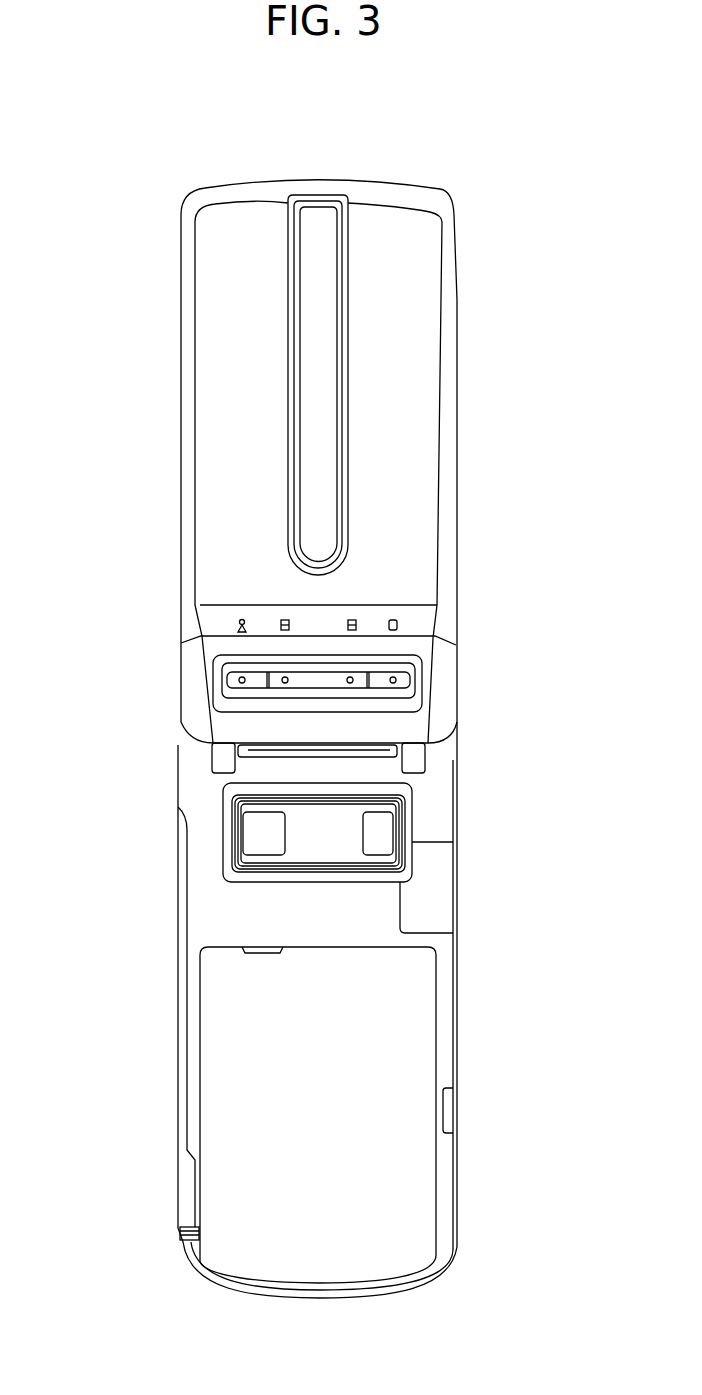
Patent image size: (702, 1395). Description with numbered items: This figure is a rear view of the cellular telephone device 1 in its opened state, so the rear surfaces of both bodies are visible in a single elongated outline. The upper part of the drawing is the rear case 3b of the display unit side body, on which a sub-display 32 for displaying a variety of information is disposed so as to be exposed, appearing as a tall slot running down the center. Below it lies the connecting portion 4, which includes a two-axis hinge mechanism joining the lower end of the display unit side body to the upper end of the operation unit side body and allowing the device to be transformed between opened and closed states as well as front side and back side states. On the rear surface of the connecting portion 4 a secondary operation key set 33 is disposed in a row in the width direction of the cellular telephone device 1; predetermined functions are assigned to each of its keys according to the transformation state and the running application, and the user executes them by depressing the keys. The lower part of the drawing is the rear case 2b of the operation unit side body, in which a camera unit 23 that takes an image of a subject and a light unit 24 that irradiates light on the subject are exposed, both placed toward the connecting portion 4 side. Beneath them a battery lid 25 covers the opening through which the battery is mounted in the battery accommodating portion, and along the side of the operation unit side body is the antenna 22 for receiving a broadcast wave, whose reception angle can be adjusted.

The cellular telephone device 1 is at (486, 198).
The rear case of the display unit side body 3b is at (207, 336).
The sub-display 32 is at (308, 437).
The secondary operation key set 33 is at (313, 633).
The connecting portion 4 is at (152, 664).
The rear case of the operation unit side body 2b is at (218, 913).
The camera unit 23 is at (370, 828).
The light unit 24 is at (260, 833).
The antenna 22 is at (190, 1190).
The battery lid 25 is at (400, 1180).